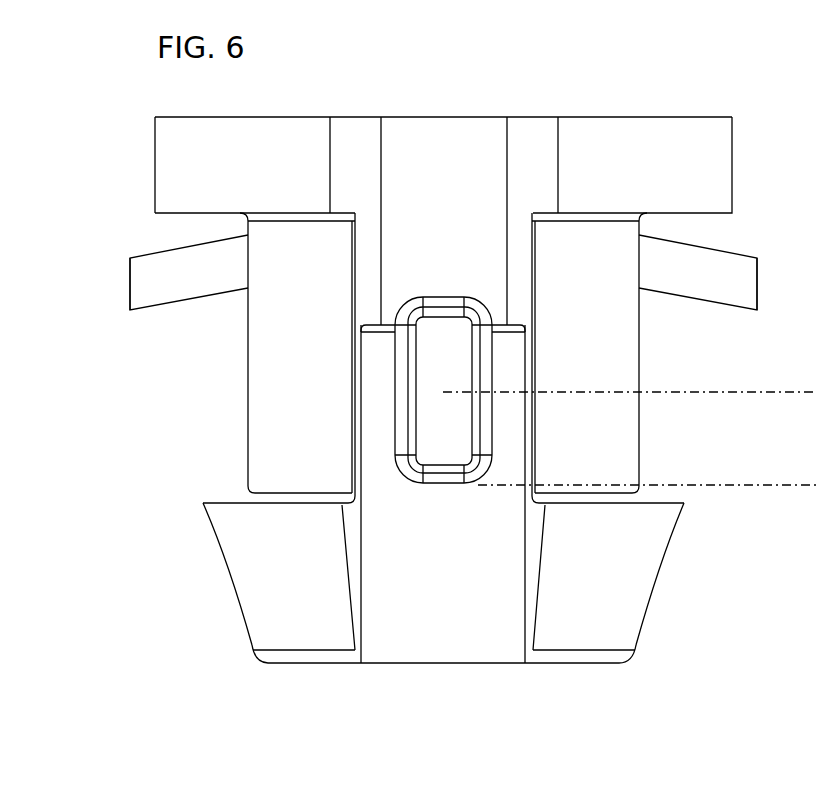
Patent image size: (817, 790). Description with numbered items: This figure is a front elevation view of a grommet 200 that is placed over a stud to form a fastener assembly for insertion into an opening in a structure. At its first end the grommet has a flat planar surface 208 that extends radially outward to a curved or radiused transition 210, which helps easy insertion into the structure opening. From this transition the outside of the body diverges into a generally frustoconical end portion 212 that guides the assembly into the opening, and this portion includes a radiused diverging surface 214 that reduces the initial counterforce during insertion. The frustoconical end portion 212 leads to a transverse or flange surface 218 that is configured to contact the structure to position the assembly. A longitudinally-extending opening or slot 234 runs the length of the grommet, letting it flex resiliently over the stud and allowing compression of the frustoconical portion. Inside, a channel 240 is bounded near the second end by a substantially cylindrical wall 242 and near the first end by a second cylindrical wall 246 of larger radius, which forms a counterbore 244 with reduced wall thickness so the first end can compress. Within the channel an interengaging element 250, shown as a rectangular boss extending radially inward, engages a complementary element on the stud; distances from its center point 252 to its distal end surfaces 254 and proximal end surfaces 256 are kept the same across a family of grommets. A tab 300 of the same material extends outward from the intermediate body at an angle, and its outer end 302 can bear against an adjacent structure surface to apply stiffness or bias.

The grommet 200 is at (330, 92).
The opening or slot 234 is at (536, 130).
The channel 240 is at (436, 125).
The cylindrical wall 242 is at (507, 150).
The interengaging element 250 is at (370, 412).
The center point 252 is at (445, 393).
The proximal end surfaces 256 is at (445, 297).
The distal end surfaces 254 is at (440, 485).
The counterbore 244 is at (410, 640).
The second cylindrical wall 246 is at (497, 645).
The transverse or flange surface 218 is at (220, 502).
The frustoconical end portion 212 is at (220, 578).
The radiused diverging surface 214 is at (655, 588).
The flat planar surface 208 is at (268, 674).
The curved or radiused transition 210 is at (628, 662).
The tab 300 is at (192, 322).
The protrusion end face 302 is at (161, 310).